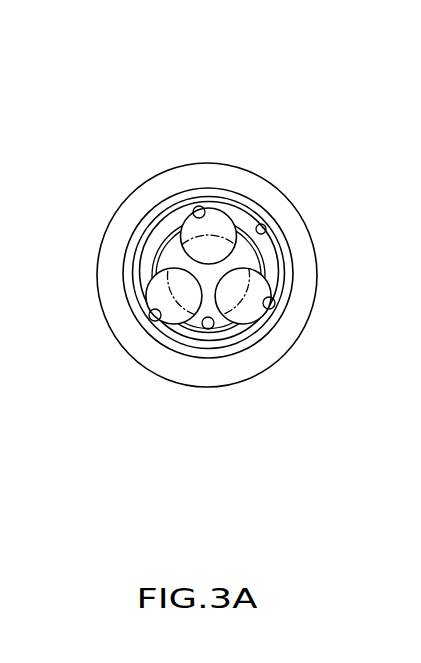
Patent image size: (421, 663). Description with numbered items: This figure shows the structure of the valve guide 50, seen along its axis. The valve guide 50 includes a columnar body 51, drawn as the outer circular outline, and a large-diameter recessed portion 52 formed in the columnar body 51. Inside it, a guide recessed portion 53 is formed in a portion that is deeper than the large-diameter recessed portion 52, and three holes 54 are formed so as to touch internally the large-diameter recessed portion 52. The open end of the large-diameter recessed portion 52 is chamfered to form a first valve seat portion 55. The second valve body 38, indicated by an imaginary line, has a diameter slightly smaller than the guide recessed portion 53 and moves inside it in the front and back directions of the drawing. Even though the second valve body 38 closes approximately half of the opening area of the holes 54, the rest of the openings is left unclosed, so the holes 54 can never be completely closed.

The valve guide 50 is at (217, 140).
The columnar body 51 is at (257, 367).
The large-diameter recessed portion 52 is at (270, 228).
The guide recessed portion 53 is at (208, 329).
The holes 54 is at (193, 210).
The first valve seat portion 55 is at (125, 273).
The second valve body 38 is at (245, 253).